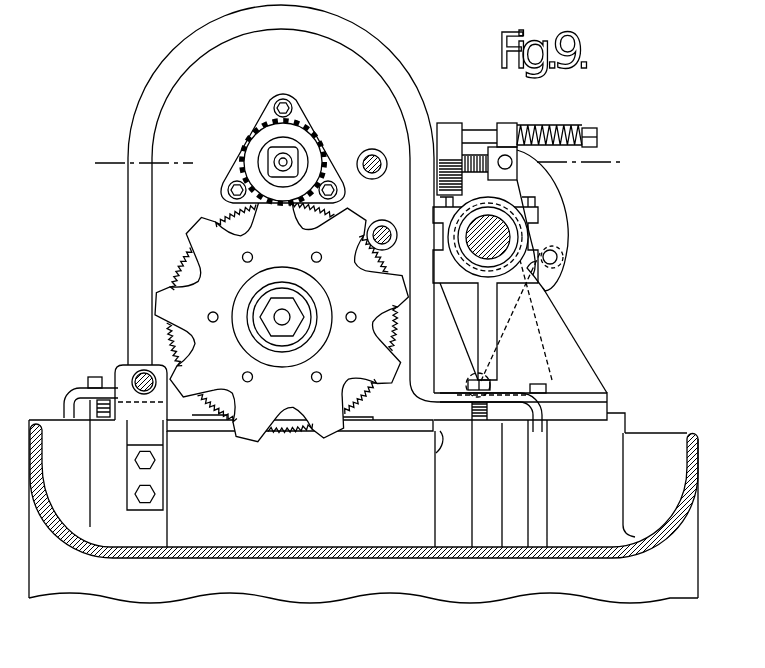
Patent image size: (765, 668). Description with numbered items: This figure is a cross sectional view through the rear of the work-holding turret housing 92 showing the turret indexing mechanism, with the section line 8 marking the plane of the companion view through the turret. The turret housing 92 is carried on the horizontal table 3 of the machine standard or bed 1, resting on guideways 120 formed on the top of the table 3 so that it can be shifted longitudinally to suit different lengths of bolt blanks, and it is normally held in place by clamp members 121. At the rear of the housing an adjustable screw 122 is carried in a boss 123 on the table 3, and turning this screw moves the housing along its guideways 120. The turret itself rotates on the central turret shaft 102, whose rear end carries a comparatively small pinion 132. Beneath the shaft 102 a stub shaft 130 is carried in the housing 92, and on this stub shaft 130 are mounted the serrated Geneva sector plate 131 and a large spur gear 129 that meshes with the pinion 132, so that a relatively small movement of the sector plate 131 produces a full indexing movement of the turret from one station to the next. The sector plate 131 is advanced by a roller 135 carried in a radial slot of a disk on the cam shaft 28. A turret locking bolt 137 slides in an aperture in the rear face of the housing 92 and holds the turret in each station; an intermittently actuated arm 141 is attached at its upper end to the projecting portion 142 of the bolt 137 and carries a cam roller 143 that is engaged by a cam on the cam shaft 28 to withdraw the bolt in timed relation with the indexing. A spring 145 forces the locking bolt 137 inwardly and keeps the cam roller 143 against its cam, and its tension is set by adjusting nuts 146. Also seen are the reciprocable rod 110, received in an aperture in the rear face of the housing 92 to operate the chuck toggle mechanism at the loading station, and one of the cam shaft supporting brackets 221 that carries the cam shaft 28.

The standard or bed 1 is at (72, 592).
The horizontal table 3 is at (38, 418).
The section line 8— 8 is at (359, 163).
The cam shaft 28 is at (556, 291).
The turret housing 92 is at (175, 62).
The turret shaft 102 is at (287, 157).
The reciprocable rod 110 is at (368, 150).
The guideways 120 is at (437, 447).
The clamp members 121 is at (520, 387).
The adjustable screw 122 is at (138, 374).
The boss 123 is at (153, 433).
The large spur gear 129 is at (302, 420).
The stub shaft 130 is at (282, 309).
The Geneva sector plate 131 is at (383, 380).
The pinion 132 is at (272, 138).
The roller 135 is at (385, 226).
The turret locking bolt 137 is at (472, 160).
The intermittently actuated arm 141 is at (562, 215).
The projecting portion of the bolt 142 is at (490, 126).
The cam roller 143 is at (566, 241).
The spring 145 is at (555, 124).
The adjusting nuts 146 is at (592, 127).
The cam shaft supporting bracket 221 is at (578, 356).